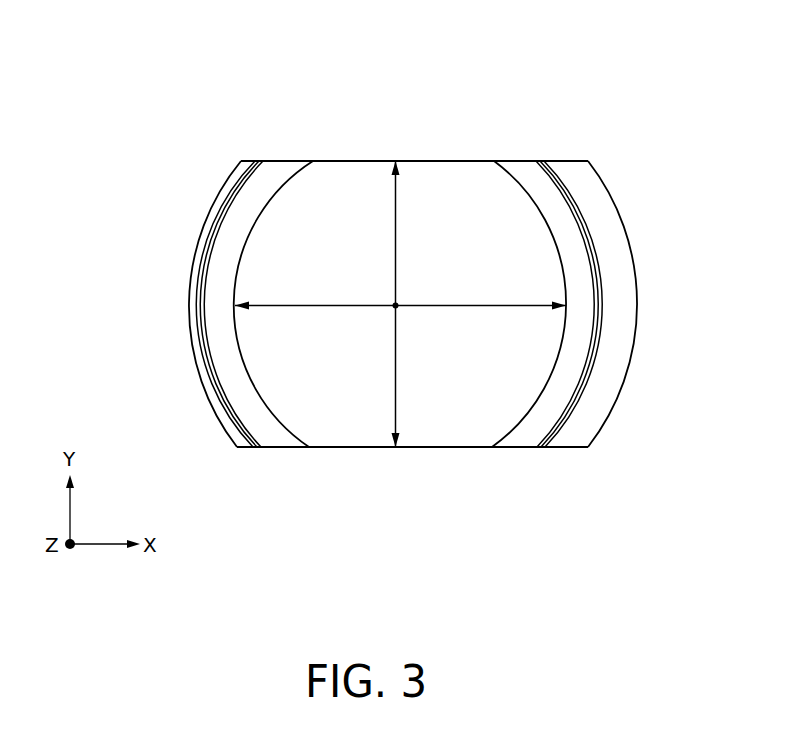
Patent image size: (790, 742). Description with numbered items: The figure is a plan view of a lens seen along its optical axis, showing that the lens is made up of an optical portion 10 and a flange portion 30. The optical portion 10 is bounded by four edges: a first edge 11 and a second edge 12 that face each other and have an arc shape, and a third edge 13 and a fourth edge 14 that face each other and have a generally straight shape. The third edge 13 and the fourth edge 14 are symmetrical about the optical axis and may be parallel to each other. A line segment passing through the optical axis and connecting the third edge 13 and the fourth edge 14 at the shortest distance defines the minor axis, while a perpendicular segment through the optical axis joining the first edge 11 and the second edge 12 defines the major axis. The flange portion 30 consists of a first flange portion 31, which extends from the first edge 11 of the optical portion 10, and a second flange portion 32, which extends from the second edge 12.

The optical portion 10 is at (452, 433).
The first edge 11 is at (233, 326).
The second edge 12 is at (568, 326).
The third edge 13 is at (357, 447).
The fourth edge 14 is at (381, 161).
The flange portion 30 is at (99, 43).
The first flange portion 31 is at (218, 275).
The second flange portion 32 is at (583, 273).